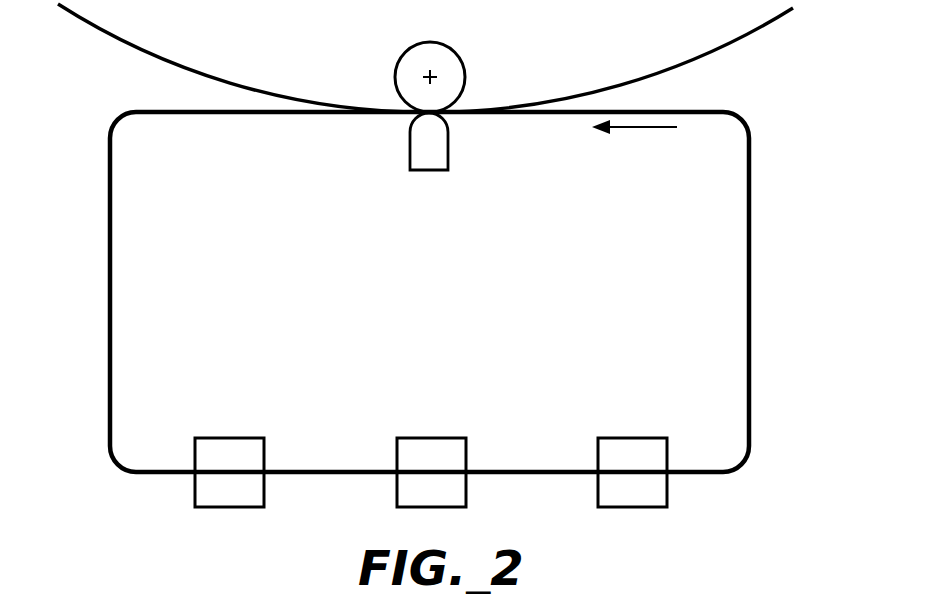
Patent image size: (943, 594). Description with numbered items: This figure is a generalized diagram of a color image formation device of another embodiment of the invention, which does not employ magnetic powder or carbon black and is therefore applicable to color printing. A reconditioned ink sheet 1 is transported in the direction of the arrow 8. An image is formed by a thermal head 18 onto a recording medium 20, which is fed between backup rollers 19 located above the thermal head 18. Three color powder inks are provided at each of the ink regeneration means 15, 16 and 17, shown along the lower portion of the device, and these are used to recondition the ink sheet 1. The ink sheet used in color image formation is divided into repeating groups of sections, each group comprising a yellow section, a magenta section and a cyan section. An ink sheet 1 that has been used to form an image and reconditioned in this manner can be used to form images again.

The ink sheet 1 is at (750, 270).
The arrow 8 is at (628, 127).
The ink regeneration means 15 is at (210, 438).
The ink regeneration means 16 is at (414, 438).
The ink regeneration means 17 is at (617, 438).
The thermal head 18 is at (434, 172).
The backup roller 19 is at (413, 46).
The recording medium 20 is at (737, 42).